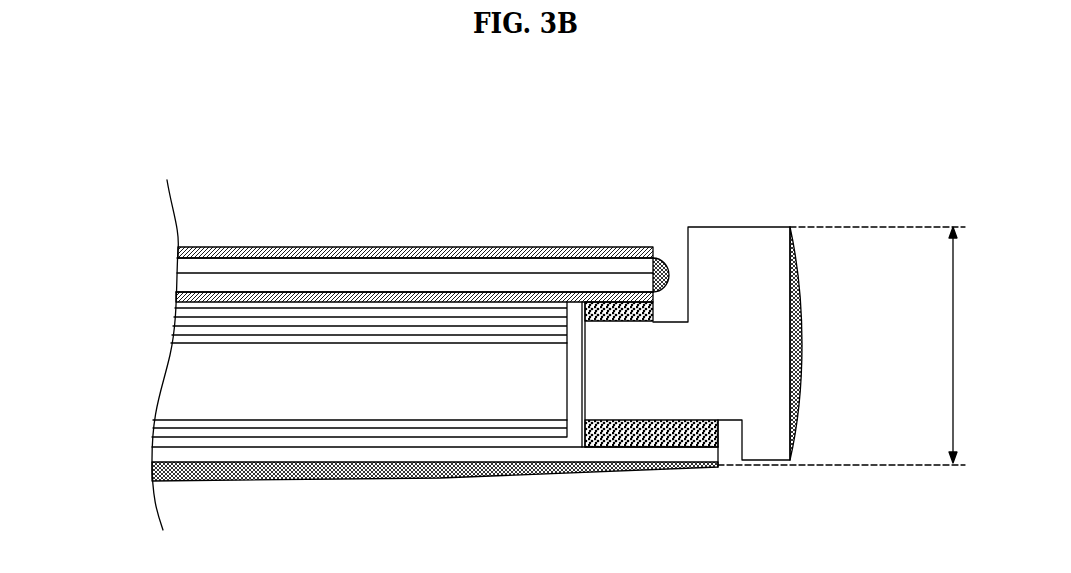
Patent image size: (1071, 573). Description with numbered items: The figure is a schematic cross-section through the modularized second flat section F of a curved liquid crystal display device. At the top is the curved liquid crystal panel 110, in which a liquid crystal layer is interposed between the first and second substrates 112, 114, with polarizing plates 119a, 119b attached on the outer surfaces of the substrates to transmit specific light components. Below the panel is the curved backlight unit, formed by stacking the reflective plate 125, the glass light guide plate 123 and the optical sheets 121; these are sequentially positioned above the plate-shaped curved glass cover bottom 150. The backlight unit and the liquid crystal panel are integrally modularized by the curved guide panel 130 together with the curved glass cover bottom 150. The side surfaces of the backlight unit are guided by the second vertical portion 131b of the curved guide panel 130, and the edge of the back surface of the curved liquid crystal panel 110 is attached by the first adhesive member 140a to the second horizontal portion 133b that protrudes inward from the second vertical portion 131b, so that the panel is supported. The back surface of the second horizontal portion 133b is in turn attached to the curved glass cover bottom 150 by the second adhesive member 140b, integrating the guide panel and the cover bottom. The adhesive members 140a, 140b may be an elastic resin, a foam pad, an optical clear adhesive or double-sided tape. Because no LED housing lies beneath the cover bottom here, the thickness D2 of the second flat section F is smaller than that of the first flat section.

The curved liquid crystal panel 110 is at (422, 217).
The first substrate 112 is at (565, 283).
The second substrate 114 is at (520, 267).
The polarizing plate 119a is at (443, 297).
The polarizing plate 119b is at (395, 253).
The optical sheets 121 is at (174, 337).
The glass light guide plate 123 is at (180, 382).
The reflective plate 125 is at (170, 432).
The curved guide panel 130 is at (788, 347).
The second vertical portion 131b is at (763, 343).
The second horizontal portion 133b is at (667, 328).
The first adhesive member 140a is at (624, 313).
The second adhesive member 140b is at (645, 438).
The curved glass cover bottom 150 is at (172, 455).
The second flat section F is at (726, 197).
The thickness D2 is at (851, 346).